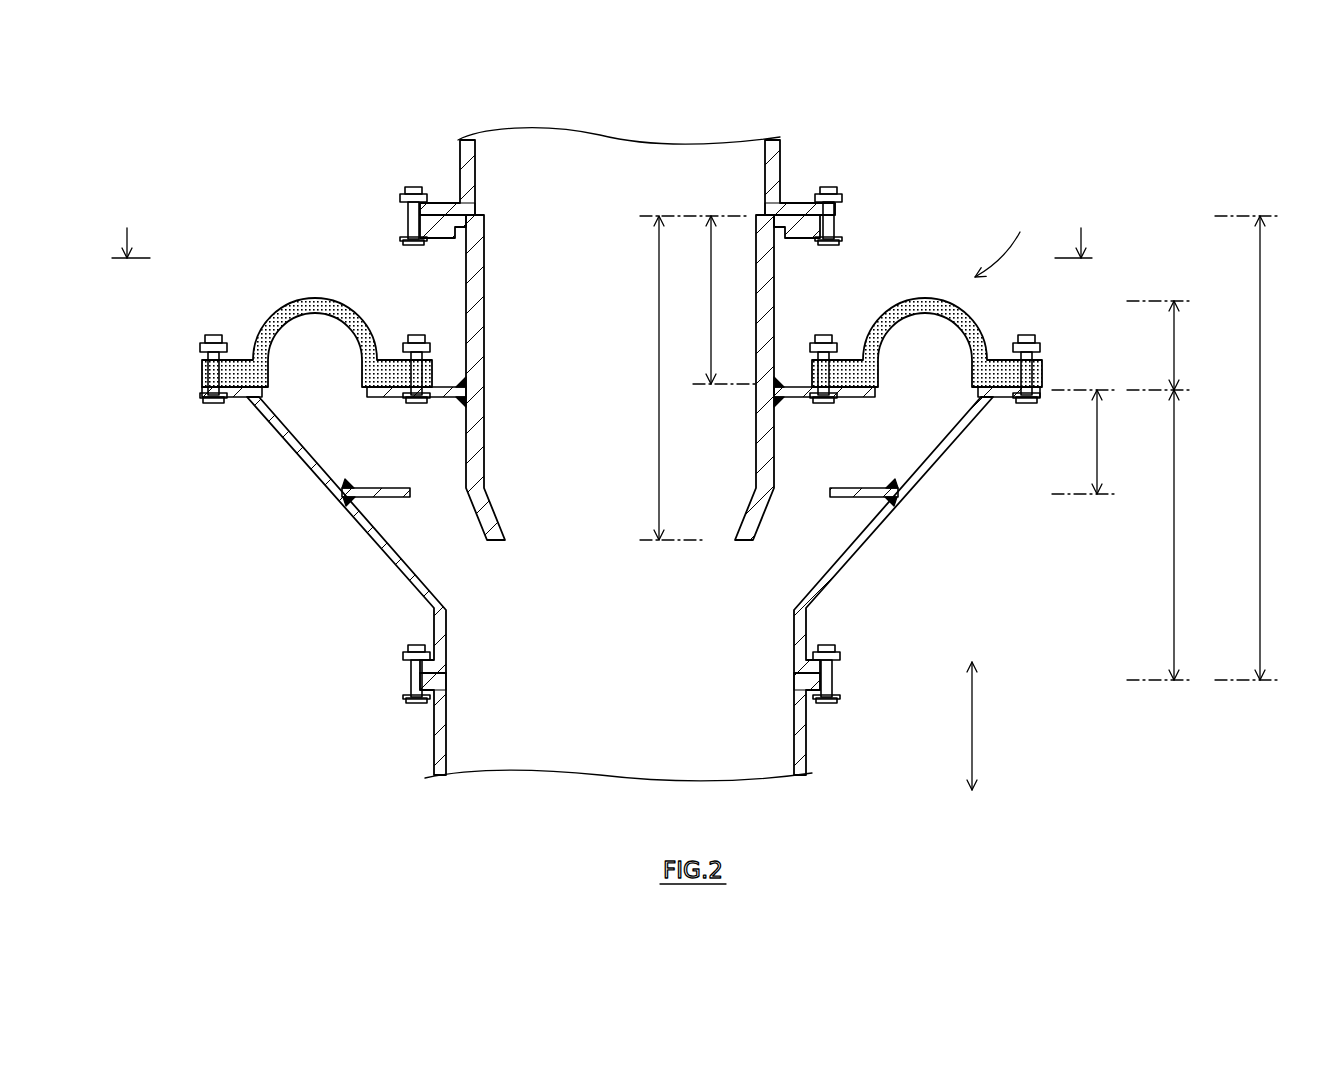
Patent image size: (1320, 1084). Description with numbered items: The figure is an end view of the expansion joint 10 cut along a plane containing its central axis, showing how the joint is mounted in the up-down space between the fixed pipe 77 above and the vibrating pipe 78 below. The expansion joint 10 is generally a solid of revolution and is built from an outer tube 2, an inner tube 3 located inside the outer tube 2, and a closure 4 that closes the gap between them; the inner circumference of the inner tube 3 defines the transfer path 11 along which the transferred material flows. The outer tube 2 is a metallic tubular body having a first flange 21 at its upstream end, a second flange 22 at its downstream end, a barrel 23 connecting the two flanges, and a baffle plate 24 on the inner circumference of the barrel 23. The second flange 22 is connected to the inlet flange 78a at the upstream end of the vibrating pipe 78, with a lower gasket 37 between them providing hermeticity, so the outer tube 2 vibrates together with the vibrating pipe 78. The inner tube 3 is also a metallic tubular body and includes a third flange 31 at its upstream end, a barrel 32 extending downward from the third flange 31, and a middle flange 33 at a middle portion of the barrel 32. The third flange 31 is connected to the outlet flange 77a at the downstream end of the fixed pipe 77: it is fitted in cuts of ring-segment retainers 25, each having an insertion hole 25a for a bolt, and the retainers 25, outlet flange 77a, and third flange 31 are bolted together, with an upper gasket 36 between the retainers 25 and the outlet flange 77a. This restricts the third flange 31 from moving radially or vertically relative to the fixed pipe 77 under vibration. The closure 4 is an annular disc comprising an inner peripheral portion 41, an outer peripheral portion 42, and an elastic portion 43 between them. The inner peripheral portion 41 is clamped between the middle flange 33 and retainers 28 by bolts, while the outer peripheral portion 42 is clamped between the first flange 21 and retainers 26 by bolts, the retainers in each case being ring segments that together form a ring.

The expansion joint 10 is at (198, 582).
The fixed pipe 77 is at (779, 147).
The outlet flange 77a is at (842, 207).
The upper gasket 36 is at (842, 215).
The retainers 25 is at (650, 233).
The insertion hole 25a is at (420, 232).
The inner tube 3 is at (610, 377).
The barrel 32 is at (486, 432).
The third flange 31 is at (780, 228).
The transfer path 11 is at (543, 331).
The closure 4 is at (317, 278).
The elastic portion 43 is at (317, 278).
The outer peripheral portion 42 is at (255, 345).
The inner peripheral portion 41 is at (848, 360).
The first flange 21 is at (238, 399).
The middle flange 33 is at (382, 398).
The retainers 26 is at (203, 340).
The retainers 28 is at (412, 334).
The outer tube 2 is at (620, 535).
The barrel 23 is at (366, 533).
The baffle plate 24 is at (892, 489).
The second flange 22 is at (403, 662).
The lower gasket 37 is at (840, 674).
The vibrating pipe 78 is at (551, 730).
The inlet flange 78a is at (403, 686).